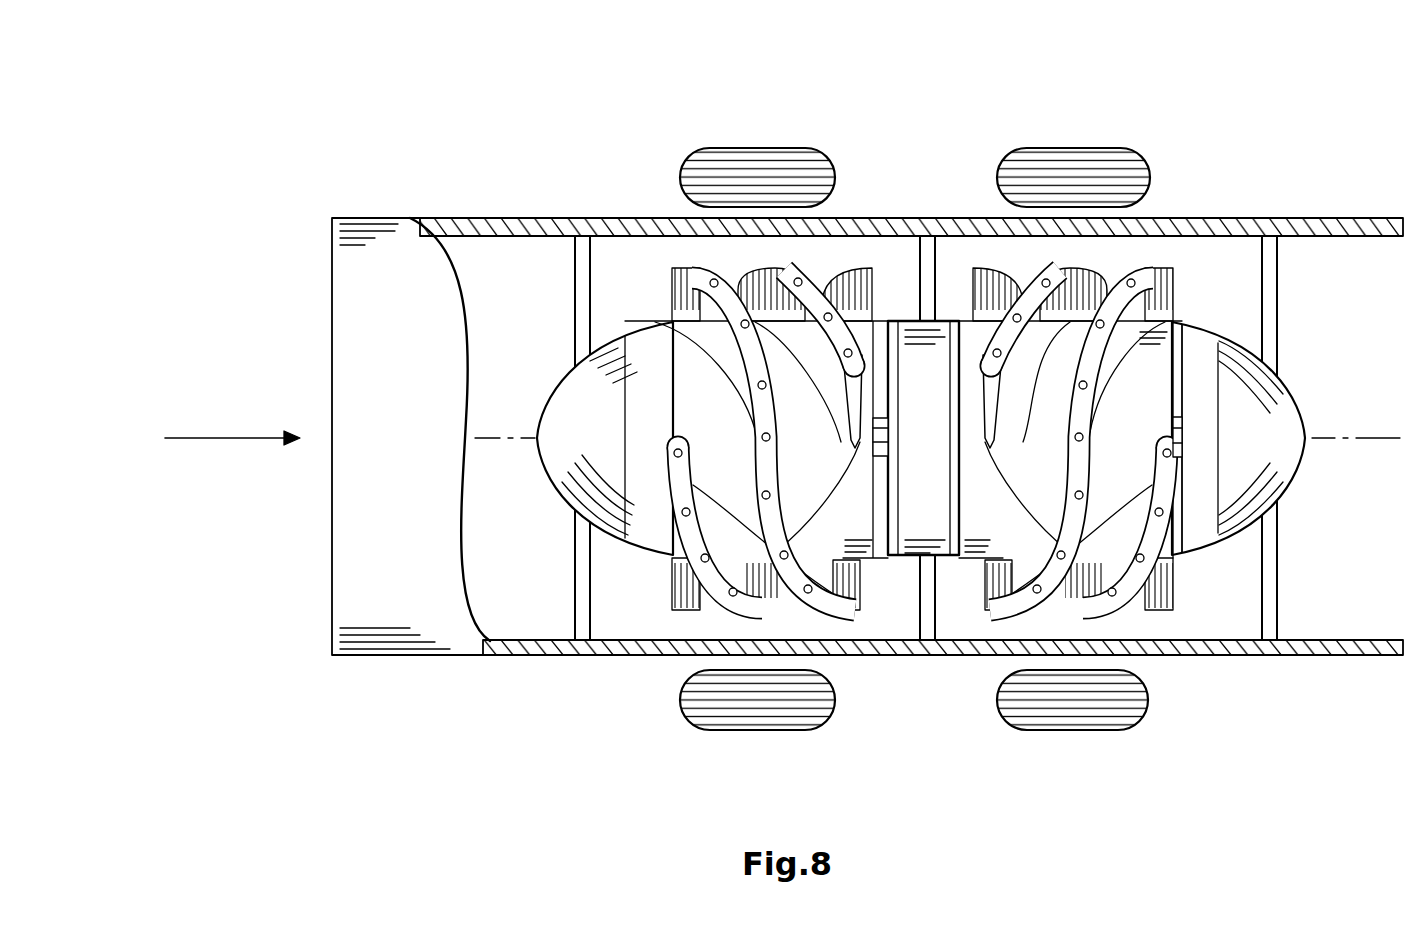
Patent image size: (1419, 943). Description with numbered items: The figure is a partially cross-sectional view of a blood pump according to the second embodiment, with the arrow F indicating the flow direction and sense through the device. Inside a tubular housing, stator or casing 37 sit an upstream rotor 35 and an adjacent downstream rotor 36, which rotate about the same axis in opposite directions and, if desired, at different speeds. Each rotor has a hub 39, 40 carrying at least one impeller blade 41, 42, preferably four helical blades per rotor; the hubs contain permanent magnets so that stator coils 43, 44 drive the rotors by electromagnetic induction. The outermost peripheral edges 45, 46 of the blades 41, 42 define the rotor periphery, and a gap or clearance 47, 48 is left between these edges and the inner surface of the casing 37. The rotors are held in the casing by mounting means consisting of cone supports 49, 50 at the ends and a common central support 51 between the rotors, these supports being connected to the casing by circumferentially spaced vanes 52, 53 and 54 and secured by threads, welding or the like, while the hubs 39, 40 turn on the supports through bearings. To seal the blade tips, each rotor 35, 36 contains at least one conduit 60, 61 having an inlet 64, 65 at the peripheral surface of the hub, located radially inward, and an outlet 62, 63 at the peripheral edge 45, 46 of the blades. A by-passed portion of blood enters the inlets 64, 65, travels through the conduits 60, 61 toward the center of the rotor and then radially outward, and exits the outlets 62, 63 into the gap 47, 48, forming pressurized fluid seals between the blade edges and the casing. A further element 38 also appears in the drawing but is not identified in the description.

The flow direction F is at (240, 438).
The upstream rotor 35 is at (548, 350).
The downstream rotor 36 is at (1315, 405).
The tubular housing, stator or casing 37 is at (368, 310).
The curved inlet wall 38 is at (433, 360).
The hub 39 is at (650, 375).
The hub 40 is at (1137, 417).
The impeller blade 41 is at (710, 318).
The impeller blade 42 is at (997, 292).
The stator coil 43 is at (740, 180).
The stator coil 44 is at (1070, 180).
The peripheral edge 45 is at (760, 477).
The peripheral edge 46 is at (1072, 445).
The gap or clearance 47 is at (790, 622).
The gap or clearance 48 is at (1123, 622).
The cone support 49 is at (570, 460).
The cone support 50 is at (1263, 430).
The common central support 51 is at (916, 378).
The vane 52 is at (575, 592).
The vane 53 is at (1277, 262).
The vane 54 is at (919, 272).
The conduit 60 is at (773, 548).
The conduit 61 is at (1183, 445).
The outlet 62 is at (727, 557).
The outlet 63 is at (1040, 590).
The inlet 64 is at (878, 560).
The inlet 65 is at (1178, 553).